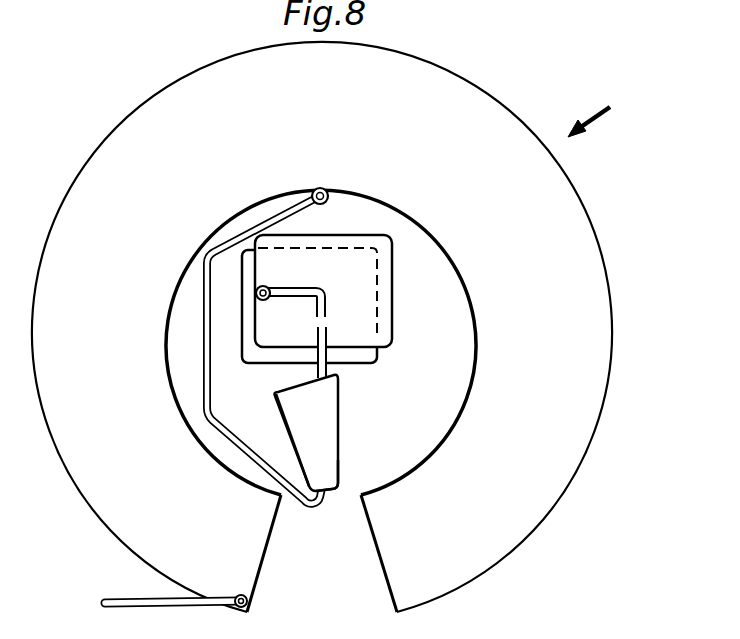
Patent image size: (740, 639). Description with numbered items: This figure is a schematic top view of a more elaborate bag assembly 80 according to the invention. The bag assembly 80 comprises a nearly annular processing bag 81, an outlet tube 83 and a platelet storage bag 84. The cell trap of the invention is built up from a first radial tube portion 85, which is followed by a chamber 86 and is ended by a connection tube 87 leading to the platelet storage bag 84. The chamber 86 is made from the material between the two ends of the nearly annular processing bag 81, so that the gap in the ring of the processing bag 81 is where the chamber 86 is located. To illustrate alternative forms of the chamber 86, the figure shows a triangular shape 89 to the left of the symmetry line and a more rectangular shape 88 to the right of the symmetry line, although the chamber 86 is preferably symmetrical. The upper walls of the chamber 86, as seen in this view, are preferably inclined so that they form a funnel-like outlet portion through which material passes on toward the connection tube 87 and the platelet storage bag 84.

The bag assembly 80 is at (608, 108).
The nearly annular processing bag 81 is at (601, 245).
The outlet tube 83 is at (208, 384).
The platelet storage bag 84 is at (383, 275).
The first radial tube portion 85 is at (248, 455).
The chamber 86 is at (327, 470).
The connection tube 87 is at (327, 308).
The more rectangular shape 88 is at (340, 410).
The triangular shape 89 is at (283, 427).